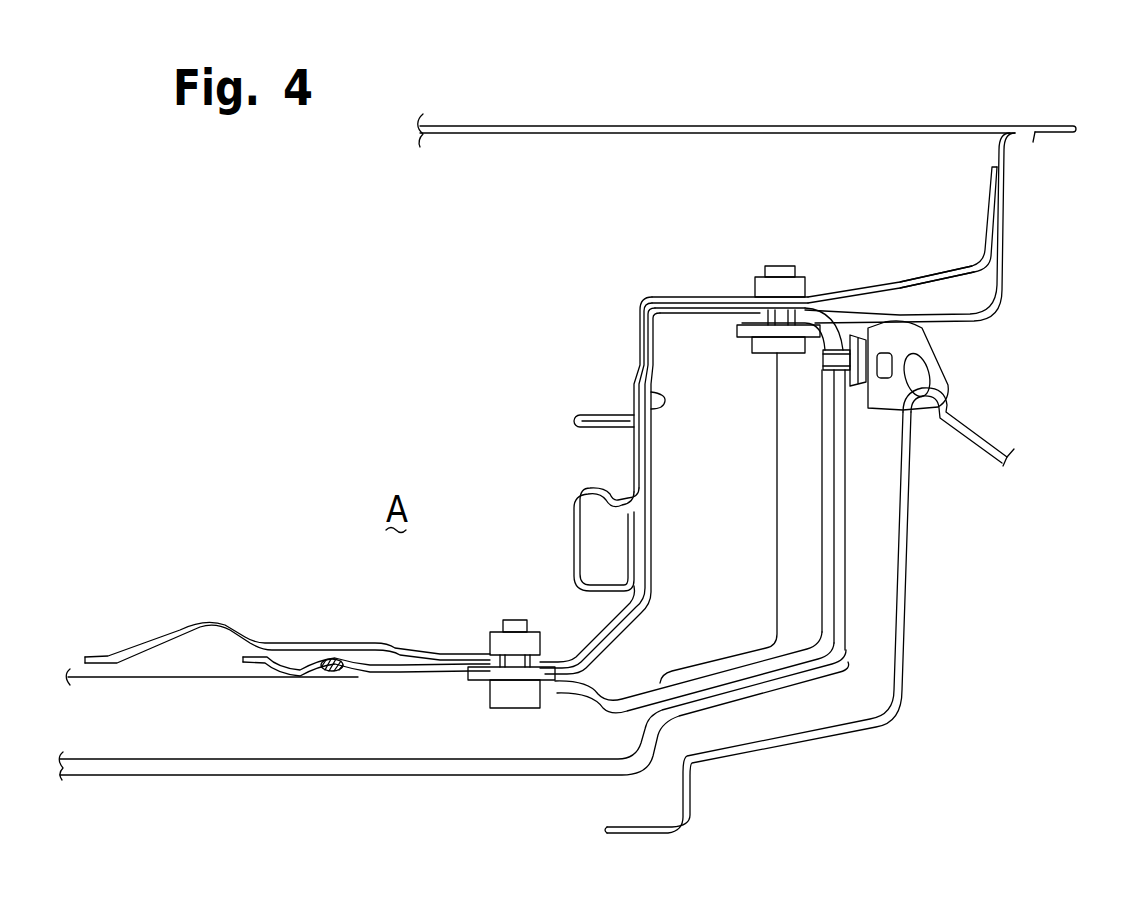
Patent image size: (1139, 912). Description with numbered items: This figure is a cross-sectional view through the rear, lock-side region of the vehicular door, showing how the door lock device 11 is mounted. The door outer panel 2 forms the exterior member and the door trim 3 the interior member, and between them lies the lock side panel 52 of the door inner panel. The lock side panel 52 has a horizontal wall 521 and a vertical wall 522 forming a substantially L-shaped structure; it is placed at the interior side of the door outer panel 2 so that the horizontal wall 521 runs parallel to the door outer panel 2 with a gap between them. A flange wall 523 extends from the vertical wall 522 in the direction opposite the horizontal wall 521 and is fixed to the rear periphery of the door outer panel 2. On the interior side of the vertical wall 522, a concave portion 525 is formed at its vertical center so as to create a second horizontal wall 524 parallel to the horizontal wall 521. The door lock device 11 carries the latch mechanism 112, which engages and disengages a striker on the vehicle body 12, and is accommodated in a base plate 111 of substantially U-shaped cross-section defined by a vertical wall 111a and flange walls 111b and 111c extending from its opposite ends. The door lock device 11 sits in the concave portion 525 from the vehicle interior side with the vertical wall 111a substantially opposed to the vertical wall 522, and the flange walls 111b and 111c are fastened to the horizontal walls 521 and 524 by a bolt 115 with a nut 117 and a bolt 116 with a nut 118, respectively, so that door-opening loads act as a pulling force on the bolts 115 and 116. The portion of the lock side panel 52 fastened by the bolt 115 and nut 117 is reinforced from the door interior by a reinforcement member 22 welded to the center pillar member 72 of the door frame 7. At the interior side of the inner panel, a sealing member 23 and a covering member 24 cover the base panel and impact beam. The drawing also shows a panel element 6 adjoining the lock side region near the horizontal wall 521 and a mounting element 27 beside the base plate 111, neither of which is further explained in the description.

The door outer panel 2 is at (746, 124).
The door trim 3 is at (290, 782).
The seat mounting plate 6 is at (207, 622).
The door frame 7 is at (566, 421).
The door lock device 11 is at (772, 508).
The vehicle body 12 is at (902, 580).
The reinforcement member 22 is at (650, 299).
The sealing member 23 is at (331, 673).
The covering member 24 is at (221, 679).
The mounting bracket 27 is at (942, 375).
The lock side panel 52 is at (1006, 285).
The center pillar member 72 is at (573, 520).
The base plate 111 is at (838, 532).
The vertical wall 111a is at (832, 620).
The flange wall 111b is at (738, 678).
The flange wall 111c is at (812, 318).
The latch mechanism 112 is at (786, 567).
The bolt 115 is at (516, 703).
The bolt 116 is at (771, 348).
The nut 117 is at (498, 638).
The nut 118 is at (779, 284).
The horizontal wall 521 is at (387, 675).
The vertical wall 522 is at (1006, 200).
The flange wall 523 is at (1020, 134).
The horizontal wall 524 is at (708, 297).
The concave portion 525 is at (637, 386).